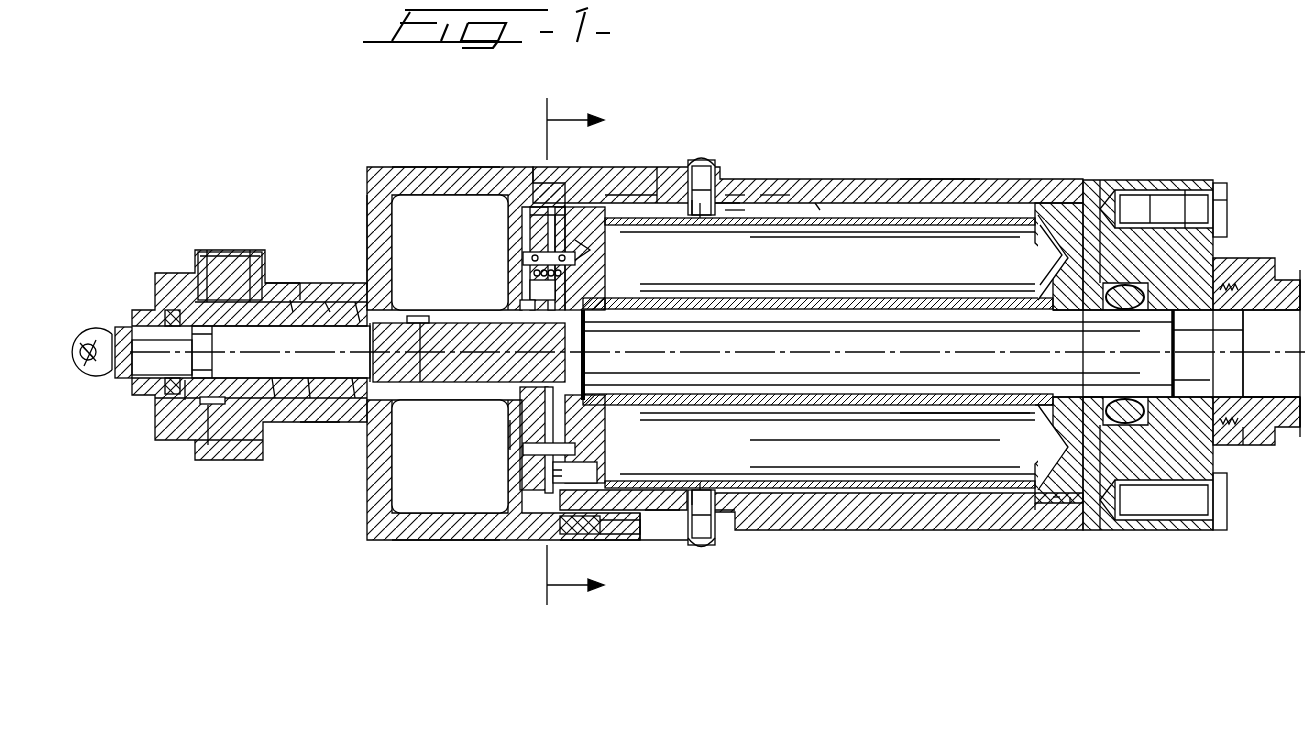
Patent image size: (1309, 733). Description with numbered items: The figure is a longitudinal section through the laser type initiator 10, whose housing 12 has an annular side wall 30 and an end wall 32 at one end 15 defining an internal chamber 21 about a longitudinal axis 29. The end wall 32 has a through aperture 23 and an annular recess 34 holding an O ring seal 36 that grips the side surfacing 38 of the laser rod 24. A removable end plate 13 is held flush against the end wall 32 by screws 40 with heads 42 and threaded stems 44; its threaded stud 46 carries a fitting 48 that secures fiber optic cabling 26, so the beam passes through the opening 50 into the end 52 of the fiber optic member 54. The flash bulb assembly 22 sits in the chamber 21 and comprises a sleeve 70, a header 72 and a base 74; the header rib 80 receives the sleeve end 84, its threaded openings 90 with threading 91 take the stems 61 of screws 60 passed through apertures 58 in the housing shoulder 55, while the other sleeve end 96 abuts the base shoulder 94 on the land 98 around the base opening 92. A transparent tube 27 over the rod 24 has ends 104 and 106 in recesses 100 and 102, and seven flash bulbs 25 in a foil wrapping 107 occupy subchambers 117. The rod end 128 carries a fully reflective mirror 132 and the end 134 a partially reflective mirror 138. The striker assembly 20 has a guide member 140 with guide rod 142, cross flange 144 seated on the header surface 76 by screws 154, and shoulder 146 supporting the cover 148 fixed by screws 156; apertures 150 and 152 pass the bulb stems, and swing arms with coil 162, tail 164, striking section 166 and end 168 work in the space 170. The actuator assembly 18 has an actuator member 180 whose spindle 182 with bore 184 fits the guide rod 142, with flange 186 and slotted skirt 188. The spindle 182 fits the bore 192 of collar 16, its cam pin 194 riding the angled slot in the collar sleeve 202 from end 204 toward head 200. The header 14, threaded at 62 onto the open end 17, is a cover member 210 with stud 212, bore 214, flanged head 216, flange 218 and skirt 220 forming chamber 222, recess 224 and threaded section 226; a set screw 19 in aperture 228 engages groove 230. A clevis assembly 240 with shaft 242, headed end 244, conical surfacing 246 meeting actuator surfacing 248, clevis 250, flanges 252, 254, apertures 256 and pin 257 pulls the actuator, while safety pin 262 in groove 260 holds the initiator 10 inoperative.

The initiator 10 is at (920, 108).
The housing 12 is at (931, 170).
The end plate 13 is at (1208, 165).
The header or cap 14 is at (366, 165).
The end of housing 15 is at (1160, 192).
The collar member 16 is at (158, 266).
The open end of housing 17 is at (622, 194).
The actuator assembly 18 is at (472, 292).
The set screw 19 is at (221, 240).
The striker assembly 20 is at (545, 225).
The internal chamber 21 is at (822, 207).
The flash bulb assembly 22 is at (900, 528).
The through opening or aperture 23 is at (1095, 312).
The laser rod 24 is at (982, 392).
The flash bulbs 25 is at (806, 478).
The fiber optic cabling 26 is at (1269, 468).
The transparent tube 27 is at (934, 420).
The longitudinal axis 29 is at (918, 354).
The annular side wall 30 is at (900, 180).
The end wall 32 is at (1100, 250).
The annular recess 34 is at (1140, 285).
The O ring seal 36 is at (1128, 425).
The external side surfacing of laser rod 38 is at (853, 362).
The bolts or screws 40 is at (1135, 203).
The heads 42 is at (1225, 200).
The threaded stems 44 is at (1176, 200).
The externally threaded stud 46 is at (1237, 295).
The fitting 48 is at (1250, 447).
The aperture or opening of end plate 50 is at (1222, 400).
The end of fiber optic member 52 is at (1235, 348).
The fiber optic member 54 is at (1290, 430).
The external annular shoulder 55 is at (660, 176).
The apertures of shoulder 58 is at (720, 188).
The screws 60 is at (705, 172).
The stems of screws 61 is at (700, 186).
The external threading 62 is at (580, 353).
The sleeve 70 is at (772, 195).
The header or cap of flash bulb assembly 72 is at (586, 225).
The base 74 is at (1035, 282).
The top surface of header 76 is at (598, 425).
The cylindrical annular rib 80 is at (738, 212).
The end of sleeve 84 is at (732, 200).
The openings of header rib 90 is at (702, 215).
The threading of openings 91 is at (702, 490).
The central through opening of base 92 is at (1075, 395).
The shoulder of base 94 is at (1072, 507).
The end of sleeve at base 96 is at (1032, 507).
The cylindrical land 98 is at (1052, 507).
The recess of header 100 is at (590, 325).
The recess of base 102 is at (1050, 305).
The end of tube 104 is at (600, 400).
The end of tube 106 is at (1045, 400).
The foil wrapping 107 is at (870, 220).
The subchamber 117 is at (1000, 232).
The end of laser rod 128 is at (608, 302).
The mirrored end portion 132 is at (590, 345).
The end of laser rod 134 is at (1160, 340).
The mirrored end portion 138 is at (1185, 386).
The guide member 140 is at (475, 352).
The guide rod portion 142 is at (440, 358).
The cross flange 144 is at (586, 385).
The external shoulder 146 is at (535, 412).
The cover member 148 is at (535, 478).
The apertures of flange 150 is at (592, 246).
The apertures of cover 152 is at (535, 255).
The headed screws 154 is at (588, 470).
The headed screws 156 is at (528, 290).
The coil portion 162 is at (570, 280).
The tail end portion 164 is at (523, 320).
The striking arm or section 166 is at (557, 250).
The terminal end portion 168 is at (551, 240).
The annular planar space 170 is at (535, 215).
The actuator member 180 is at (310, 382).
The tubular spindle portion 182 is at (356, 383).
The bore 184 is at (276, 382).
The flange portion 186 is at (512, 465).
The annular skirt 188 is at (655, 512).
The bore of collar 192 is at (293, 310).
The cam pin 194 is at (360, 320).
The head portion of collar 200 is at (168, 425).
The sleeve portion of collar 202 is at (278, 302).
The end of collar sleeve portion 204 is at (382, 306).
The cover member of header 210 is at (322, 425).
The tubular stud portion 212 is at (304, 290).
The bore of stud portion 214 is at (330, 310).
The flanged head 216 is at (226, 450).
The circular flange 218 is at (380, 212).
The skirt 220 is at (412, 172).
The inner chamber 222 is at (400, 508).
The intermediate annular recess 224 is at (566, 520).
The internally threaded annular section 226 is at (612, 526).
The internally threaded aperture 228 is at (215, 262).
The annular groove 230 is at (208, 445).
The clevis assembly 240 is at (96, 322).
The shaft section 242 is at (148, 372).
The headed inner end 244 is at (200, 360).
The annular conical surfacing 246 is at (193, 402).
The annular surfacing of actuator 248 is at (205, 336).
The clevis element 250 is at (118, 378).
The flange 252 is at (88, 340).
The flange 254 is at (100, 376).
The cross apertures 256 is at (125, 380).
The transverse pin 257 is at (95, 325).
The annular groove 260 is at (173, 396).
The safety pin or key 262 is at (168, 312).